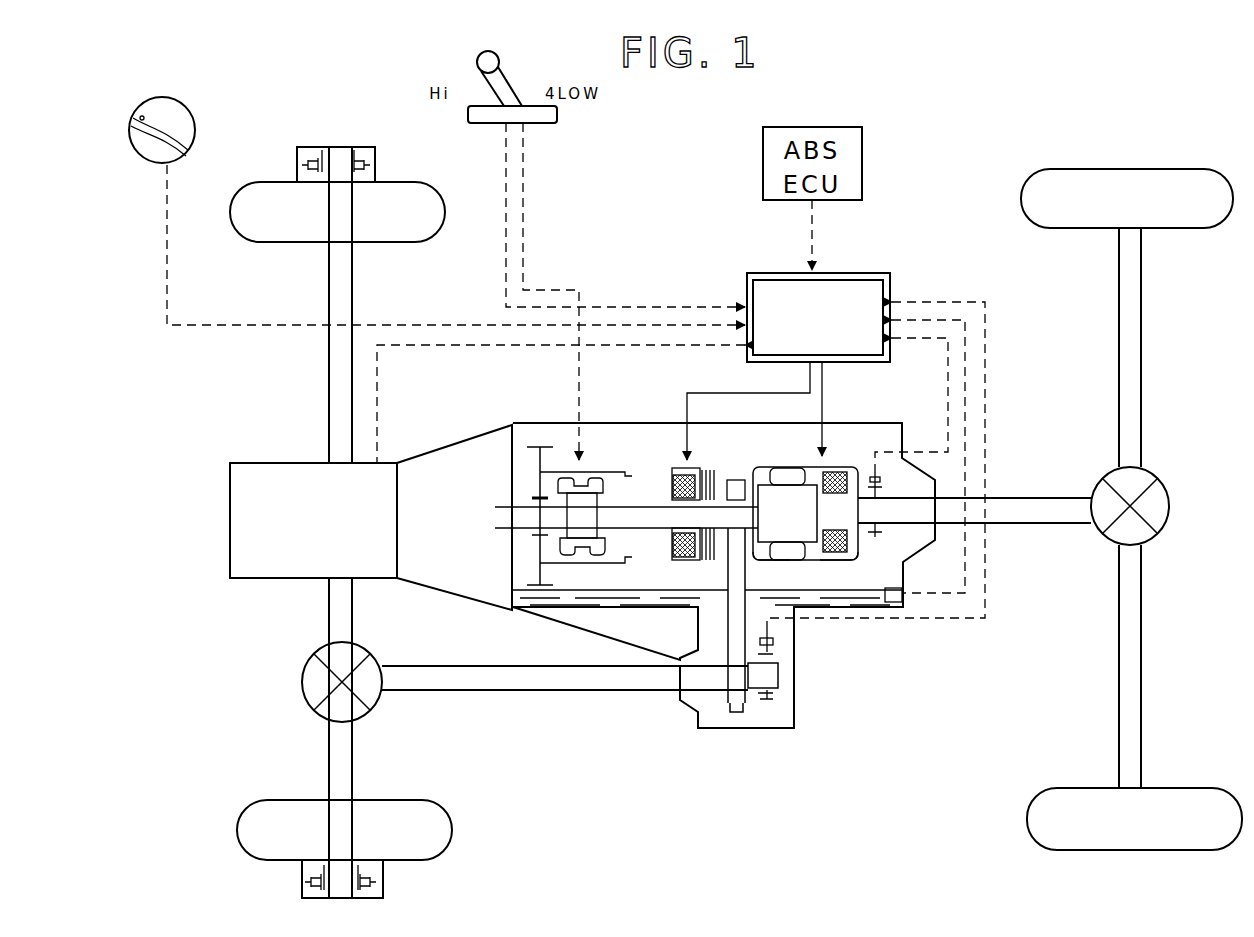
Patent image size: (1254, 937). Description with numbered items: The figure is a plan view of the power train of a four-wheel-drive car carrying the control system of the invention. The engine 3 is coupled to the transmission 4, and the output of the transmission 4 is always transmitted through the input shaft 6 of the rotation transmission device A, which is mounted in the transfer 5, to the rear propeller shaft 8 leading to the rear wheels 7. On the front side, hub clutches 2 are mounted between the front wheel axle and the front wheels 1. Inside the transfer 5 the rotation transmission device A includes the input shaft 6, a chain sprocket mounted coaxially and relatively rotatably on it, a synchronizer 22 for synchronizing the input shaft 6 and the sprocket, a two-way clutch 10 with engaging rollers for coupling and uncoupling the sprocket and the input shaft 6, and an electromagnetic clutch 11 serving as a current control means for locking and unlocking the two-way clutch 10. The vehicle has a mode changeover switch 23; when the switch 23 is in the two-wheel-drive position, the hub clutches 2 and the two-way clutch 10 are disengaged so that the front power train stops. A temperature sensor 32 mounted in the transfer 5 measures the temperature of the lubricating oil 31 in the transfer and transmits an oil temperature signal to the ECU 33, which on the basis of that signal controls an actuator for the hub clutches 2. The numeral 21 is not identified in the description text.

The front wheels 1 is at (270, 228).
The hub clutches 2 is at (310, 150).
The engine 3 is at (307, 547).
The transmission 4 is at (442, 547).
The transfer 5 is at (540, 421).
The input shaft 6 is at (645, 515).
The rear wheels 7 is at (1059, 177).
The rear propeller shaft 8 is at (1045, 510).
The two-way clutch 10 is at (794, 566).
The electromagnetic clutch 11 is at (841, 562).
The electromagnetic coil of transfer clutch 21 is at (837, 470).
The synchronizer 22 is at (673, 461).
The mode changeover switch 23 is at (140, 148).
The lubricating oil 31 is at (608, 600).
The temperature sensor 32 is at (900, 603).
The ECU 33 is at (870, 283).
The rotation transmission device A is at (738, 460).